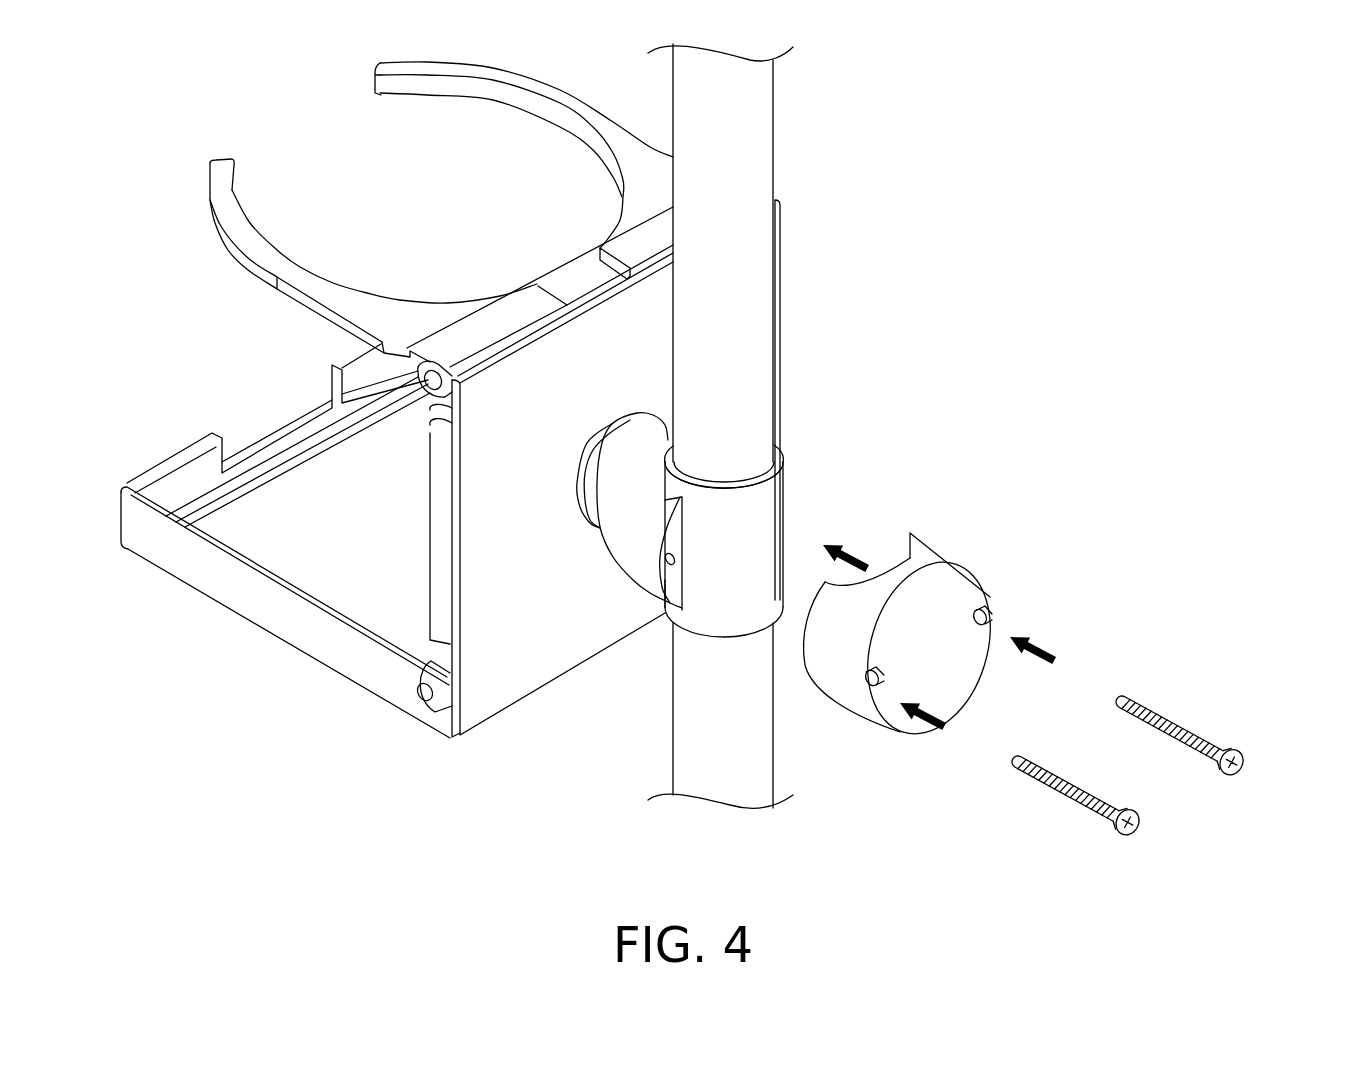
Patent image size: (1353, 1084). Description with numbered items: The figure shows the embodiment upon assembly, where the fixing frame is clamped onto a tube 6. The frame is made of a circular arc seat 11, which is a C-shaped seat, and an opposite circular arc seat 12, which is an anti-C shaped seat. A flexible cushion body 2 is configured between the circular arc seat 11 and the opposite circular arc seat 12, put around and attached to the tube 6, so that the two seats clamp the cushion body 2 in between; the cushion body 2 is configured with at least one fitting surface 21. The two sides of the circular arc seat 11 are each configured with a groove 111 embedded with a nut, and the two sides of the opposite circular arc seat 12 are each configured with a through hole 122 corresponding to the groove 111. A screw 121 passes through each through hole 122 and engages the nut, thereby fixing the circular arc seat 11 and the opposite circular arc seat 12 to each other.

The tube 6 is at (773, 142).
The flexible cushion body 2 is at (785, 542).
The fitting surface 21 is at (783, 465).
The circular arc seat 11 is at (603, 563).
The groove 111 is at (673, 562).
The opposite circular arc seat 12 is at (932, 547).
The through hole 122 is at (990, 615).
The screw 121 is at (1150, 705).